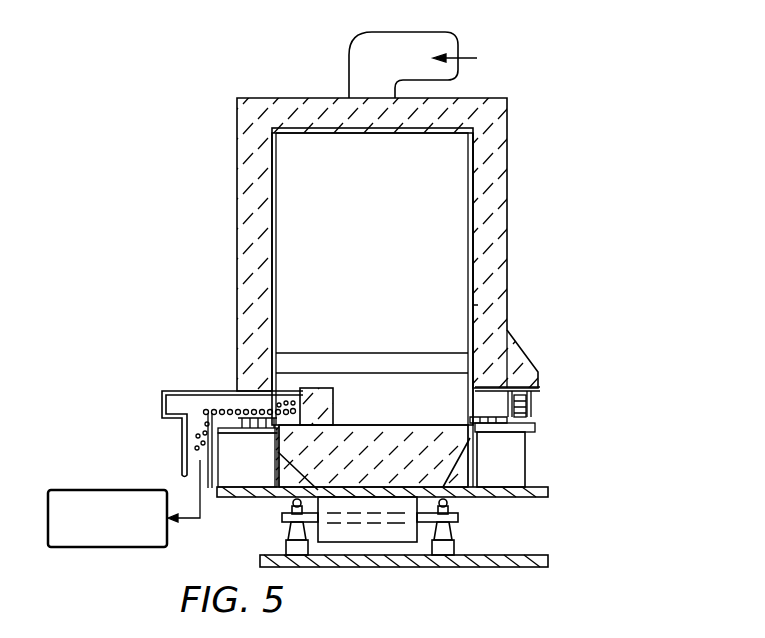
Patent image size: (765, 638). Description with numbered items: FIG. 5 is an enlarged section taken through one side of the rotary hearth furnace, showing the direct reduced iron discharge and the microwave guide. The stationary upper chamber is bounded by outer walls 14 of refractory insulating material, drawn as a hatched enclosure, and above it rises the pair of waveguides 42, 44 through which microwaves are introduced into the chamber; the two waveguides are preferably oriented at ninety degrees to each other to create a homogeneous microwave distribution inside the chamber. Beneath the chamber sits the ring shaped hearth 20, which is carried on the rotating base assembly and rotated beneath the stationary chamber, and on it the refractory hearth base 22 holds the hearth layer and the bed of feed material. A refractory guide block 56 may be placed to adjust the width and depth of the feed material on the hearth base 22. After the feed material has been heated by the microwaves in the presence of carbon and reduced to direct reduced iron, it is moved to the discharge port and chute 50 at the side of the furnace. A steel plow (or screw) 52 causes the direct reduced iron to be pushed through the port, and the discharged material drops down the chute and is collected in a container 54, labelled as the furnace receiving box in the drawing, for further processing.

The outer walls 14 is at (237, 190).
The waveguide 42 is at (451, 49).
The waveguide 44 is at (455, 58).
The discharge port and chute 50 is at (143, 388).
The container 54 is at (118, 490).
The refractory guide block 56 is at (335, 402).
The steel plow 52 is at (293, 428).
The hearth base 22 is at (470, 448).
The ring shaped hearth 20 is at (248, 509).